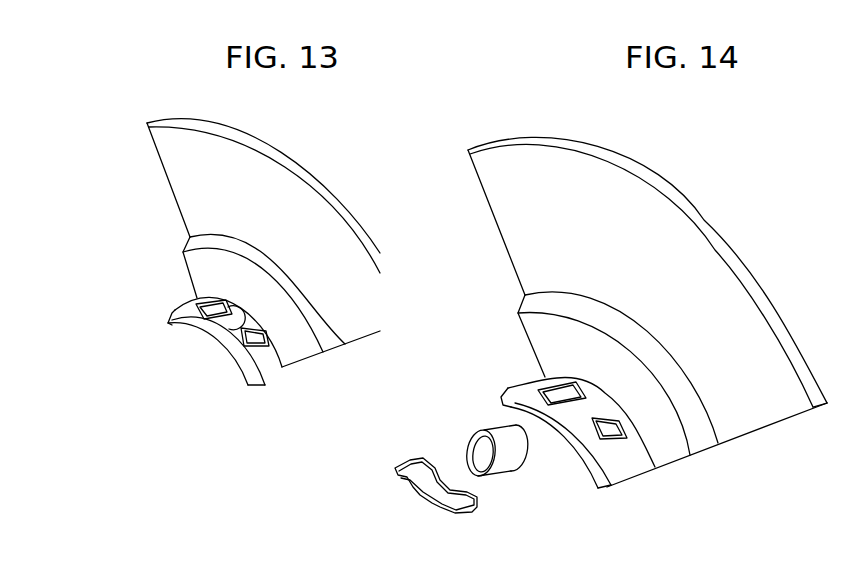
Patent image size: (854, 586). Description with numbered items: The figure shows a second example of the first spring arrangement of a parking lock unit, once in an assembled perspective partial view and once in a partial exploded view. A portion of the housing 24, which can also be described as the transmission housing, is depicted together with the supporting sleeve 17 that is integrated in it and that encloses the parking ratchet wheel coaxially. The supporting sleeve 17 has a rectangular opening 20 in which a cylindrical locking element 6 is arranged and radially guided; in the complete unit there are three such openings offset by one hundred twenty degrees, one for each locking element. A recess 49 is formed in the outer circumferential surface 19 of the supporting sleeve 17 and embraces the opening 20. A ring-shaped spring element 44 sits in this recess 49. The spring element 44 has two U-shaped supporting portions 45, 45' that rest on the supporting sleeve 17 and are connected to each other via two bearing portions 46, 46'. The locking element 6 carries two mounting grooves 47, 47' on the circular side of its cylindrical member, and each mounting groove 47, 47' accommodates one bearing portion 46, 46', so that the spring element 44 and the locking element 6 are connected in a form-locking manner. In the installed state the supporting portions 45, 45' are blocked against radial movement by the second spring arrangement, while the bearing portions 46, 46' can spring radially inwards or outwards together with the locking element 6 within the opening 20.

In FIG. 13, the housing 24 is at (273, 176).
In FIG. 14, the housing 24 is at (630, 203).
In FIG. 14, the opening 20 is at (593, 405).
In FIG. 13, the supporting sleeve 17 is at (172, 318).
In FIG. 14, the supporting sleeve 17 is at (512, 402).
In FIG. 13, the outer circumferential surface 19 is at (263, 364).
In FIG. 14, the outer circumferential surface 19 is at (618, 470).
In FIG. 13, the locking element 6 is at (235, 313).
In FIG. 14, the locking element 6 is at (493, 440).
In FIG. 13, the spring element 44 is at (212, 312).
In FIG. 14, the spring element 44 is at (440, 524).
In FIG. 14, the supporting portion 45 is at (491, 534).
In FIG. 14, the supporting portion 45' is at (380, 442).
In FIG. 14, the bearing portion 46 is at (393, 517).
In FIG. 14, the bearing portion 46' is at (432, 445).
In FIG. 14, the mounting groove 47 is at (527, 494).
In FIG. 14, the mounting groove 47' is at (550, 463).
In FIG. 14, the recess 49 is at (610, 427).